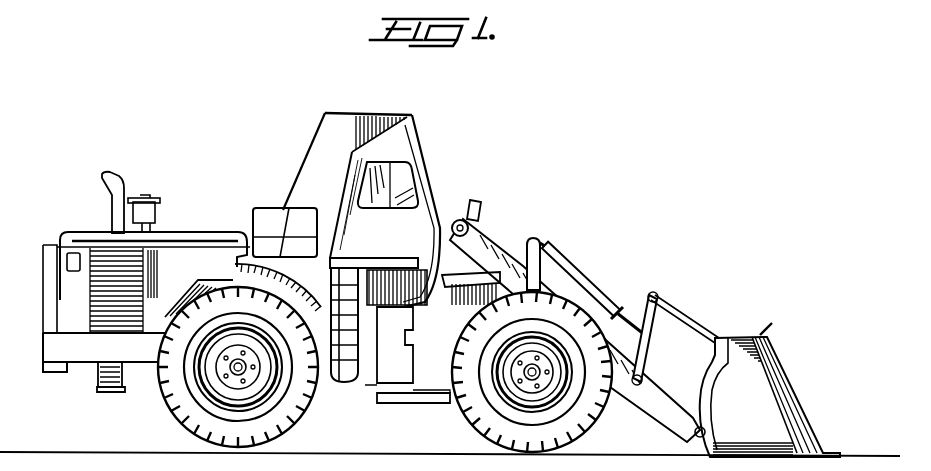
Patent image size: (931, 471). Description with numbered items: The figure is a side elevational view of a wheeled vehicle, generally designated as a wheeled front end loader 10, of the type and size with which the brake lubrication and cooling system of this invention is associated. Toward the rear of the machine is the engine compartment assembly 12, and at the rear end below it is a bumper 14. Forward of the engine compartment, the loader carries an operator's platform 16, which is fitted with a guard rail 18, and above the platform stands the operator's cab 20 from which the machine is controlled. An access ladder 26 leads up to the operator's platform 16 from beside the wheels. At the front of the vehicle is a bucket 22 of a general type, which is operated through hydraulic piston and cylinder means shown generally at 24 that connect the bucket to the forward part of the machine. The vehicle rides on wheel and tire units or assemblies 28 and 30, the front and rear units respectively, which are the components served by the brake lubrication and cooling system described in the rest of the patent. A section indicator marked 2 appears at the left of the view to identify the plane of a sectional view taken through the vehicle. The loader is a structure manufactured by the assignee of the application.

The section line 2- 2 is at (46, 452).
The wheeled front end loader 10 is at (550, 170).
The engine compartment assembly 12 is at (190, 233).
The bumper 14 is at (67, 374).
The operator's platform 16 is at (380, 259).
The guard rail 18 is at (268, 206).
The operator's cab 20 is at (427, 140).
The bucket 22 is at (788, 348).
The hydraulic piston and cylinder means 24 is at (606, 276).
The access ladder 26 is at (346, 388).
The wheel and tire unit 28 is at (476, 423).
The wheel and tire unit 30 is at (162, 423).